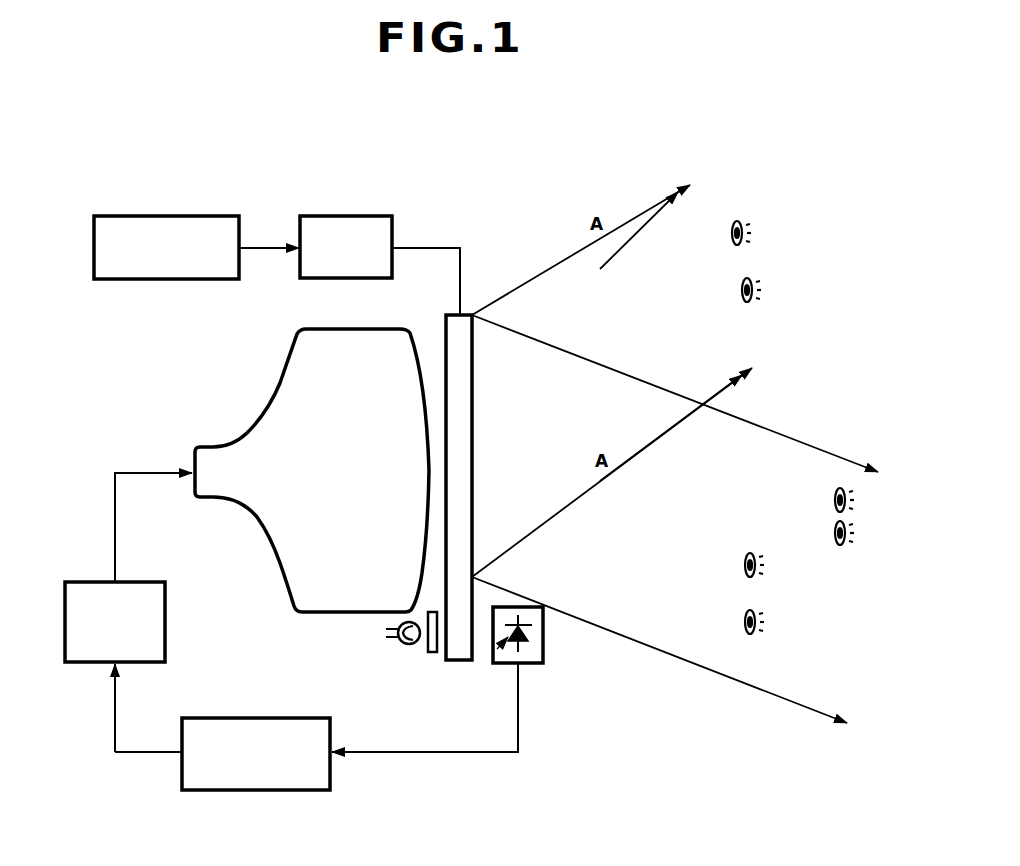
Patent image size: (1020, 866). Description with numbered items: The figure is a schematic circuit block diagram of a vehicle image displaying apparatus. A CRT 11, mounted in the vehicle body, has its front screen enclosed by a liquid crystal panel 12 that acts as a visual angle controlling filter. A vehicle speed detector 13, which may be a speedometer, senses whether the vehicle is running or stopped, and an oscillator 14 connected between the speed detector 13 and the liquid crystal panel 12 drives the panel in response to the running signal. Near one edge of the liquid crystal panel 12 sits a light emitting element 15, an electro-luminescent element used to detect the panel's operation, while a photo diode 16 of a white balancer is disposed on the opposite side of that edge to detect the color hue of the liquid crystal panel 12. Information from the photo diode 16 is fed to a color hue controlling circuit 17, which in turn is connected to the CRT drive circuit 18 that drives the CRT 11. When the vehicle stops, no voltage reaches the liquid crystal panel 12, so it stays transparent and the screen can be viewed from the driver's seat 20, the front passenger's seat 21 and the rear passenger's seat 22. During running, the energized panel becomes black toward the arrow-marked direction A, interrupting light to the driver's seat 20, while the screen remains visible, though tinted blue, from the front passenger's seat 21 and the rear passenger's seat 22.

The CRT 11 is at (284, 377).
The liquid crystal panel 12 is at (468, 314).
The vehicle speed detector 13 is at (202, 213).
The oscillator 14 is at (375, 213).
The light emitting element 15 is at (409, 645).
The photo diode 16 is at (543, 645).
The color hue controlling circuit 17 is at (318, 790).
The CRT drive circuit 18 is at (165, 633).
The driver's seat 20 is at (770, 258).
The front passenger's seat 21 is at (765, 595).
The rear passenger's seat 22 is at (857, 513).